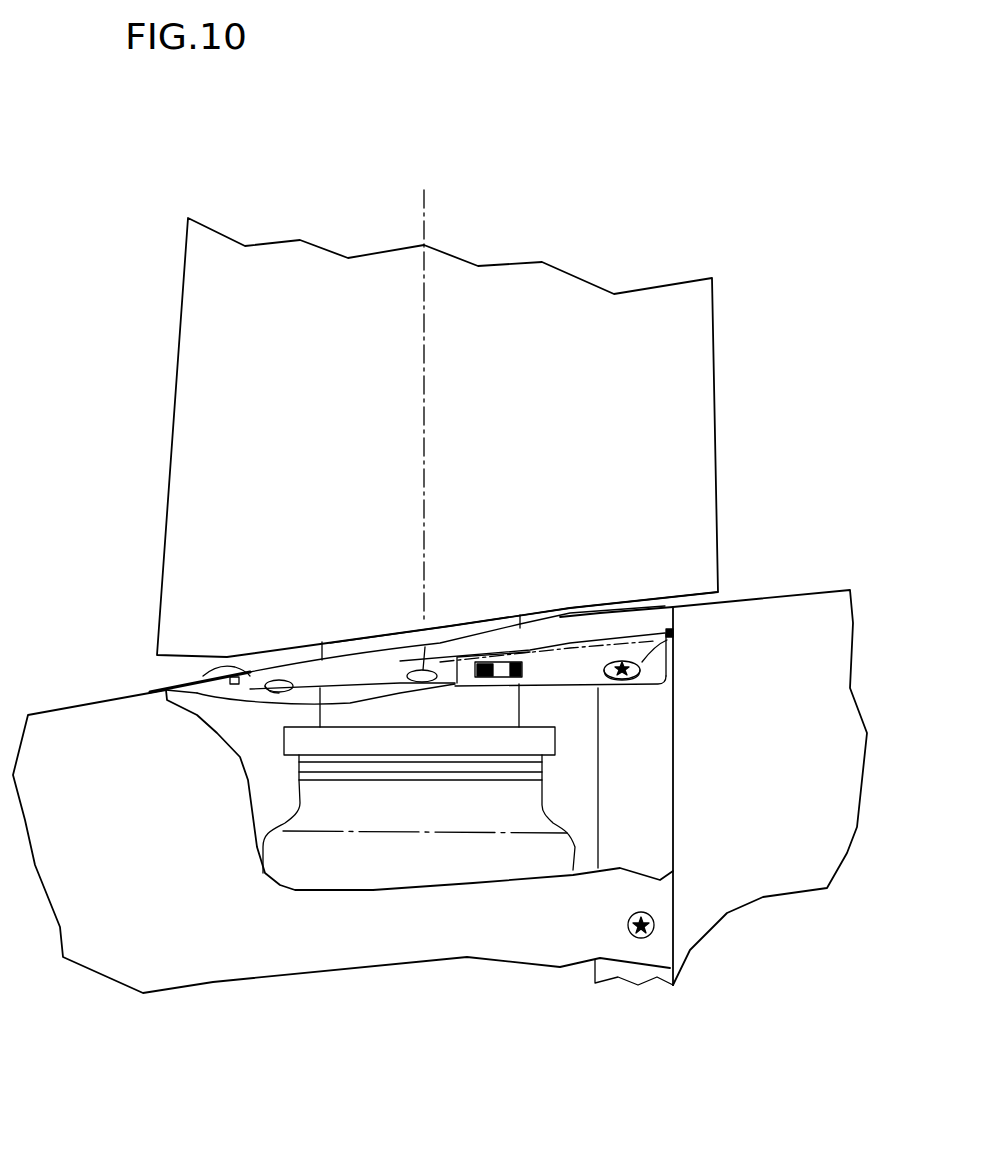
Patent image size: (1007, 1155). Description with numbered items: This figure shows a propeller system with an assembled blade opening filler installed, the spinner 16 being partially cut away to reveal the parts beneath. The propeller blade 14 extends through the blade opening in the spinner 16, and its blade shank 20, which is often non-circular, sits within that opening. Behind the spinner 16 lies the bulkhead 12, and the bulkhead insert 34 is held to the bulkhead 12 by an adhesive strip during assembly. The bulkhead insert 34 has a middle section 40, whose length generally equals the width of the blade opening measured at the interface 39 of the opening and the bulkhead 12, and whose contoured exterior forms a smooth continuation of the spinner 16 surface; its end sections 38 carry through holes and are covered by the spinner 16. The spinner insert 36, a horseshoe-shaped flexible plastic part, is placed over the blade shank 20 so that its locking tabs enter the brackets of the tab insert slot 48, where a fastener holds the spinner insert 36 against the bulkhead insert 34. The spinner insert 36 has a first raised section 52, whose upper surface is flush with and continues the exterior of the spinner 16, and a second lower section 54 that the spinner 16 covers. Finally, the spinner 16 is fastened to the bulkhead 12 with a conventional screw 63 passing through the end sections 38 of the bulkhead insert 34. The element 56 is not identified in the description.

The bulkhead 12 is at (782, 769).
The propeller blade 14 is at (301, 427).
The spinner 16 is at (73, 888).
The blade shank 20 is at (443, 635).
The bulkhead insert 34 is at (580, 618).
The spinner insert 36 is at (355, 648).
The end section 38 is at (540, 679).
The interface 39 is at (673, 918).
The middle section 40 is at (663, 602).
The tab insert slot 48 is at (455, 686).
The first raised section 52 is at (283, 668).
The second lower section 54 is at (207, 697).
The hook 56 is at (222, 671).
The screw 63 is at (675, 636).